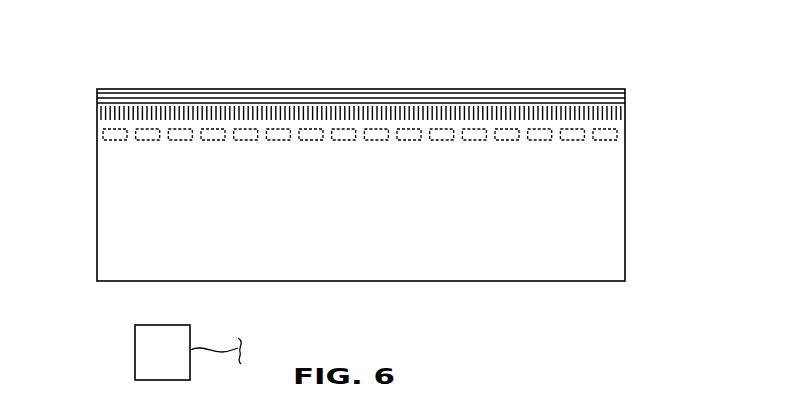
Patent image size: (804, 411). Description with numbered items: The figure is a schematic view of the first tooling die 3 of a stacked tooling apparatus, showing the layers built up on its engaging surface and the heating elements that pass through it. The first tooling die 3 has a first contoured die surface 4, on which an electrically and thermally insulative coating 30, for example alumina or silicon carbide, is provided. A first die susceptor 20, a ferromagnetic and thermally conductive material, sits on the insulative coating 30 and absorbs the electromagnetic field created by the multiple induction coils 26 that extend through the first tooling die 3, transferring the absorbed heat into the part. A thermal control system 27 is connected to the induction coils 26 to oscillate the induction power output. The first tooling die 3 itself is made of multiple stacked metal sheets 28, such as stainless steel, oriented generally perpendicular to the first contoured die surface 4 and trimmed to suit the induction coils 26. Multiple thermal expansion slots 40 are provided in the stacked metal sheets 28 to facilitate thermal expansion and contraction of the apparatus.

The first tooling die 3 is at (395, 188).
The first contoured die surface 4 is at (277, 107).
The first die susceptor 20 is at (418, 89).
The induction coils 26 is at (343, 140).
The thermal control system 27 is at (145, 352).
The stacked metal sheets 28 is at (603, 207).
The electrically and thermally insulative coating 30 is at (508, 105).
The thermal expansion slots 40 is at (575, 113).